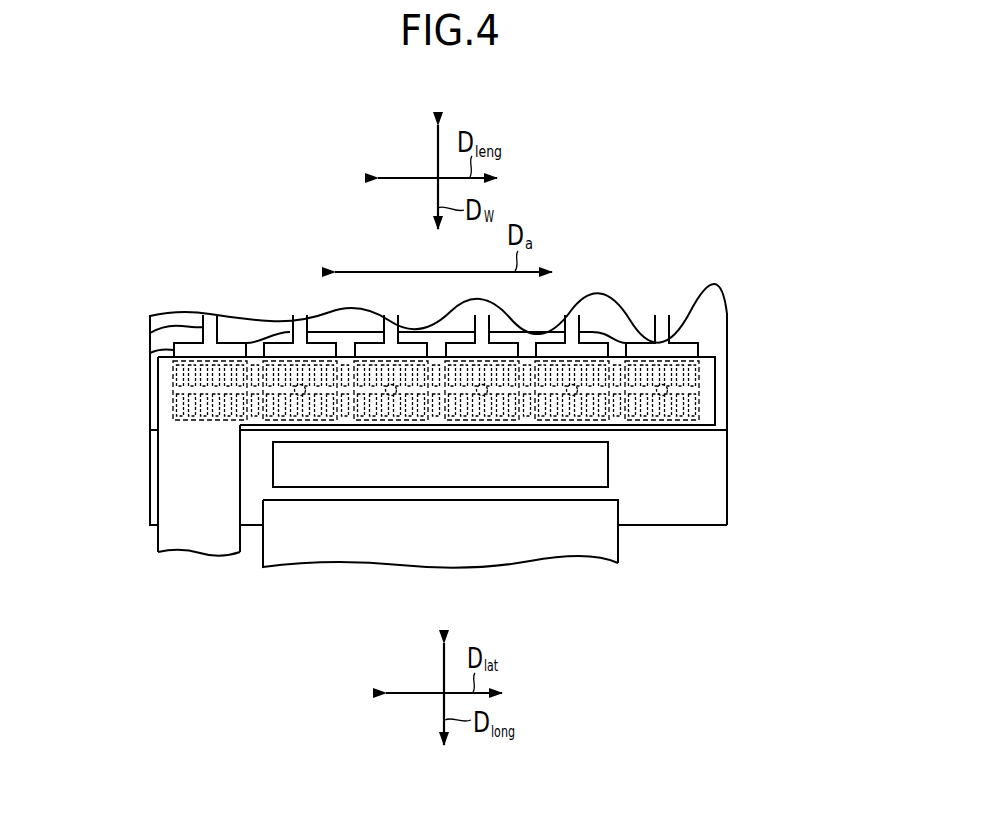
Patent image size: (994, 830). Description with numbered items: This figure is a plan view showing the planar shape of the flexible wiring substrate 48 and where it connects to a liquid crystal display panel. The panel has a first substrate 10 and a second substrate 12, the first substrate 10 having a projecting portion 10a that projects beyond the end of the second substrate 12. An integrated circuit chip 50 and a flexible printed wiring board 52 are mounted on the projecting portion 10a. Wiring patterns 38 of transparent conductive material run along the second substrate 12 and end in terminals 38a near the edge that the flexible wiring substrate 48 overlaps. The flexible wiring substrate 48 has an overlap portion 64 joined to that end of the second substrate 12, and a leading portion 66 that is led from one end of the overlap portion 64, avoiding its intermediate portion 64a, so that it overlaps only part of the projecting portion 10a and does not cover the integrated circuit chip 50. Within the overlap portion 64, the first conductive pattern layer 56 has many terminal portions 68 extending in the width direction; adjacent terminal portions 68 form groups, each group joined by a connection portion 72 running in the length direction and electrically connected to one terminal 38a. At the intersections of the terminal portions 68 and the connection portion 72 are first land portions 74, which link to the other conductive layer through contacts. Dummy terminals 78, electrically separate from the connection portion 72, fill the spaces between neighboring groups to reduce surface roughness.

The first substrate 10 is at (720, 475).
The projecting portion 10a is at (667, 518).
The second substrate 12 is at (728, 338).
The wiring pattern 38 is at (150, 333).
The terminal 38a is at (150, 353).
The flexible wiring substrate 48 is at (146, 455).
The integrated circuit chip 50 is at (545, 478).
The flexible printed wiring board 52 is at (460, 549).
The first conductive pattern layer 56 is at (713, 363).
The overlap portion 64 is at (716, 391).
The intermediate portion 64a is at (456, 332).
The leading portion 66 is at (158, 503).
The terminal portion 68 is at (312, 420).
The connection portion 72 is at (273, 433).
The first land portion 74 is at (298, 393).
The dummy terminal 78 is at (345, 420).